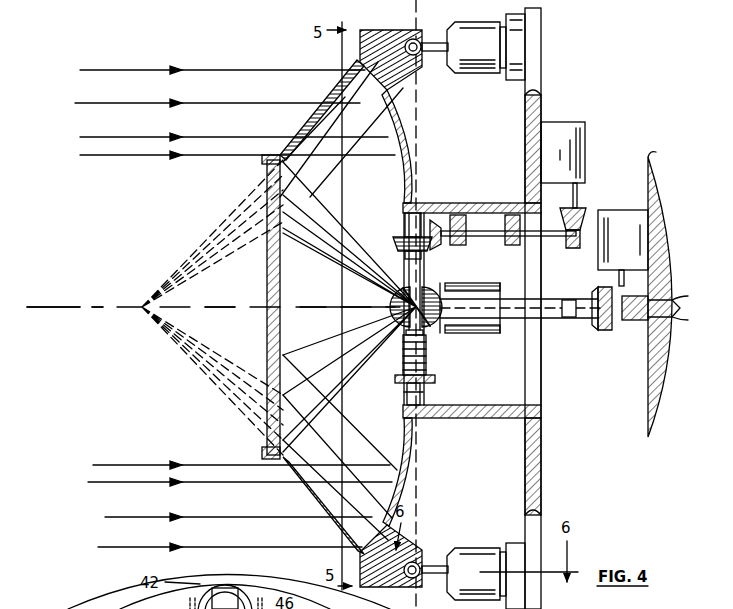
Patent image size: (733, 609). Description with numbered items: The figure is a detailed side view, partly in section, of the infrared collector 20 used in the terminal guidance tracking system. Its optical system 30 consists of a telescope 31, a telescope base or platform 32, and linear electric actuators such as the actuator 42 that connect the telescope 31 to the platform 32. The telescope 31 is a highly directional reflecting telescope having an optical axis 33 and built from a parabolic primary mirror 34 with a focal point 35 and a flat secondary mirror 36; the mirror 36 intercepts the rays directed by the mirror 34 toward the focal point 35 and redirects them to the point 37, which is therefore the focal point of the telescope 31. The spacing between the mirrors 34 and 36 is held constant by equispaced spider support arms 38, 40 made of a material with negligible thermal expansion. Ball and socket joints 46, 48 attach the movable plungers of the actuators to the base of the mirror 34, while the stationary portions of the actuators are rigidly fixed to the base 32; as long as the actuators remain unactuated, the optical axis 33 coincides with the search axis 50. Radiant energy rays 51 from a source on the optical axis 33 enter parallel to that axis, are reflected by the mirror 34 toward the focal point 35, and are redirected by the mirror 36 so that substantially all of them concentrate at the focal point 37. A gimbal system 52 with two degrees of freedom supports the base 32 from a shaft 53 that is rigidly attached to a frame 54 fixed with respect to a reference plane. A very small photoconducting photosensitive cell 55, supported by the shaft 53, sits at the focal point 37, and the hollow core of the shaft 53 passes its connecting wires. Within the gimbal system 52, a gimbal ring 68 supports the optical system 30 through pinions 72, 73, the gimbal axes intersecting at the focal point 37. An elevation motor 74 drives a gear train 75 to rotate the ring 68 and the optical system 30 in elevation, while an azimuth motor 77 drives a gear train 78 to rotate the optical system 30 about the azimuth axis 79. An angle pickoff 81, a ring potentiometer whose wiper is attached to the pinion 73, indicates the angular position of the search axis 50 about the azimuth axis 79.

The infrared collector 20 is at (545, 478).
The optical system 30 is at (402, 495).
The telescope 31 is at (250, 286).
The telescope base or platform 32 is at (535, 96).
The optical axis 33 is at (97, 312).
The parabolic primary mirror 34 is at (398, 450).
The focal point 35 is at (142, 306).
The flat secondary mirror 36 is at (282, 288).
The focal point of telescope 37 is at (425, 298).
The spider support arm 38 is at (336, 88).
The spider support arm 40 is at (338, 523).
The linear electric actuator 42 is at (484, 60).
The ball and socket joint 46 is at (410, 40).
The ball and socket joint 48 is at (419, 580).
The search axis 50 is at (45, 306).
The radiant energy rays 51 is at (135, 70).
The gimbal system 52 is at (429, 350).
The shaft 53 is at (553, 298).
The frame 54 is at (652, 158).
The photosensitive cell 55 is at (396, 316).
The gimbal ring 68 is at (406, 346).
The pinion 72 is at (404, 227).
The pinion 73 is at (406, 390).
The elevation motor 74 is at (610, 222).
The gear train 75 is at (603, 330).
The azimuth motor 77 is at (575, 126).
The gear train 78 is at (574, 246).
The azimuth axis 79 is at (416, 174).
The angle pickoff 81 is at (436, 378).